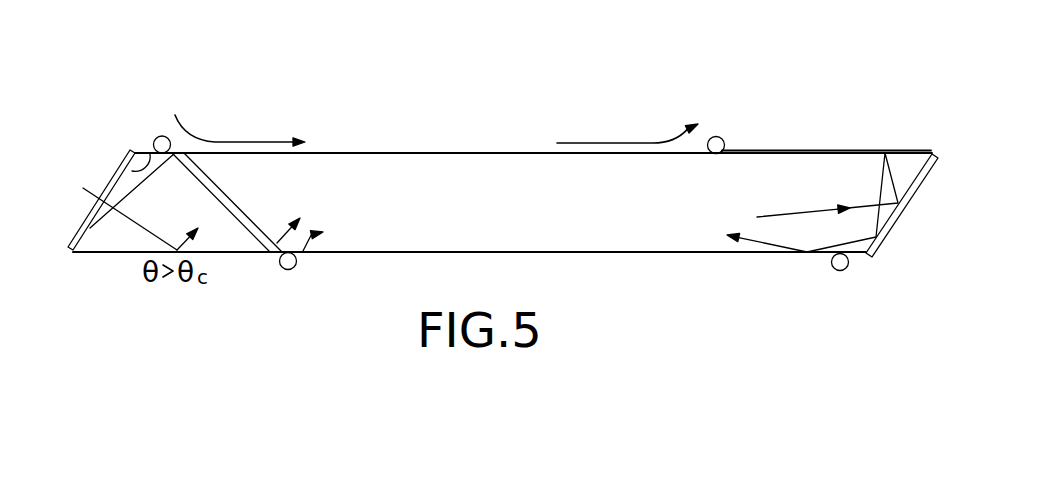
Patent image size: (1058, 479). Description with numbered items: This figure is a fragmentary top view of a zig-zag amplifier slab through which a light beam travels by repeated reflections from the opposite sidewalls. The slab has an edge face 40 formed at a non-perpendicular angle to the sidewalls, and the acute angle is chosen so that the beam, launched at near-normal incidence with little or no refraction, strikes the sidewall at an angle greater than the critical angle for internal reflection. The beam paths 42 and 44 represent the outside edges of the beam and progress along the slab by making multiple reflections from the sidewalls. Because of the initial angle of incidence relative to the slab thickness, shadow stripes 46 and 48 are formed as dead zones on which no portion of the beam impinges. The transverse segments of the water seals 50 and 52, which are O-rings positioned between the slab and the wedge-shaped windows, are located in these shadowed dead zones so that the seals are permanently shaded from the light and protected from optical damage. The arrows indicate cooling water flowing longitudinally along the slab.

The edge face 40 is at (89, 228).
The beam path 42 is at (134, 192).
The beam path 44 is at (283, 222).
The shadow stripe 46 is at (121, 163).
The shadow stripe 48 is at (300, 243).
The water seal 50 is at (160, 135).
The water seal 52 is at (298, 264).